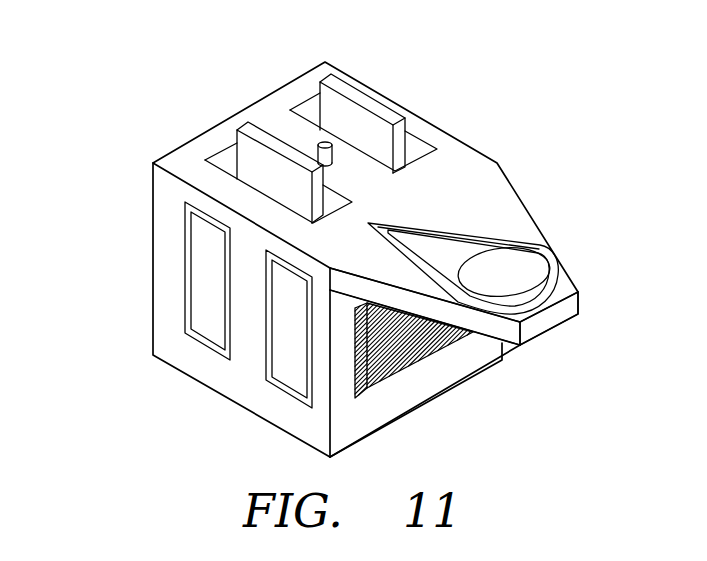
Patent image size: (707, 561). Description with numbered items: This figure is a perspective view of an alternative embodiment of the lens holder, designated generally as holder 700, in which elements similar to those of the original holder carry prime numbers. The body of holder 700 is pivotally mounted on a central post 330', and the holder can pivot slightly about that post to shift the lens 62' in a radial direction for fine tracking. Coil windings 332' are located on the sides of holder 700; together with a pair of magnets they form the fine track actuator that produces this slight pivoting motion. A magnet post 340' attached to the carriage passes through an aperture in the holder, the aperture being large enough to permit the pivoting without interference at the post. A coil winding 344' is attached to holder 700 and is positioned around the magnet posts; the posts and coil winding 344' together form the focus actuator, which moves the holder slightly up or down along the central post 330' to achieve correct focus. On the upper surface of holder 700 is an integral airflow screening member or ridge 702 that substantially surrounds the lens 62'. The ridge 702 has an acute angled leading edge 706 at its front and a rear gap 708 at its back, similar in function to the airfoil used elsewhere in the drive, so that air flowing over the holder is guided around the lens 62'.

The lens holder 700 is at (160, 443).
The central post 330' is at (247, 141).
The magnet post 340' is at (289, 106).
The coil winding 332' is at (239, 313).
The coil winding 344' is at (442, 364).
The lens 62' is at (498, 306).
The airflow screening member or ridge 702 is at (507, 227).
The acute angled leading edge 706 is at (368, 225).
The rear gap 708 is at (557, 267).